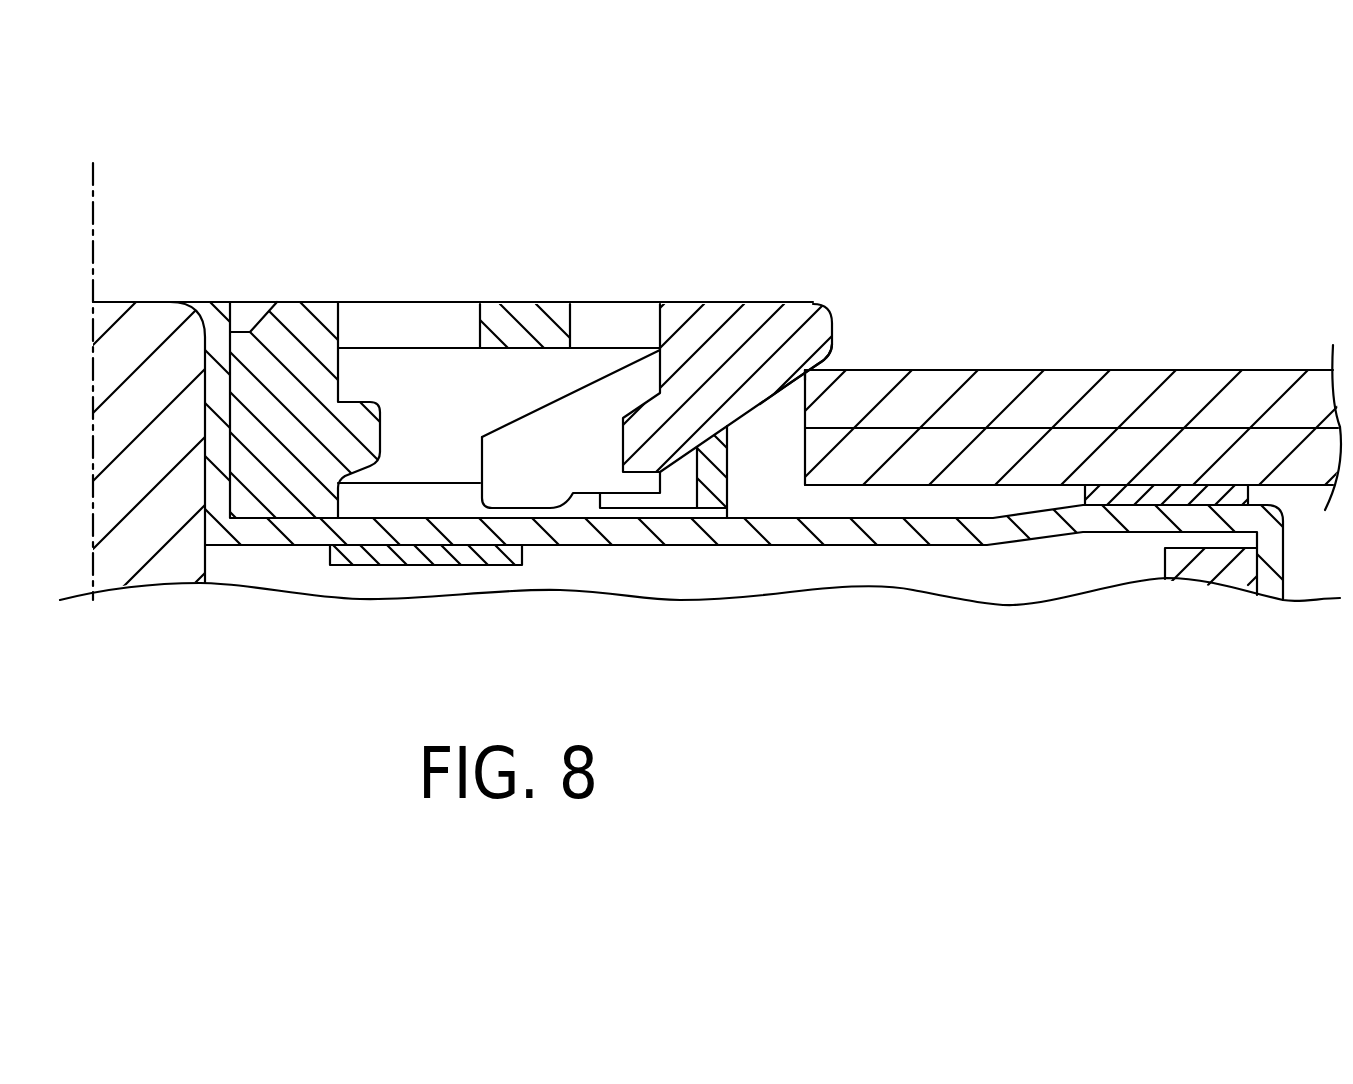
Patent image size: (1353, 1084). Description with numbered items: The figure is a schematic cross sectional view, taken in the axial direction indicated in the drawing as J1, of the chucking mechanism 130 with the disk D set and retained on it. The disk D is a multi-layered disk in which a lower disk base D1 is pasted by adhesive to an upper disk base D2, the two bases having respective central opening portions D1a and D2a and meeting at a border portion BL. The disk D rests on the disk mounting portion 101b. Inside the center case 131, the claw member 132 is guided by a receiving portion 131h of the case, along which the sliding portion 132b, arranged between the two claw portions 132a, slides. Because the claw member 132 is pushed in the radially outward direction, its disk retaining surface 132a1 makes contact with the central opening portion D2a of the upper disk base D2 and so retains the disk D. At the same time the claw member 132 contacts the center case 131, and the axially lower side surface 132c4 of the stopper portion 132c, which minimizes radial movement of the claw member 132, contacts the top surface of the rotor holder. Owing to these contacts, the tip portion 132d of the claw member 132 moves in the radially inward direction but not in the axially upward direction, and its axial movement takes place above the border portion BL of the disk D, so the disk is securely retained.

The axis line J1 is at (93, 240).
The chucking mechanism 130 is at (277, 226).
The center case 131 is at (399, 287).
The receiving portion 131h is at (728, 483).
The claw member 132 is at (727, 287).
The claw portion 132a is at (797, 398).
The disk retaining surface 132a1 is at (806, 362).
The sliding portion 132b is at (766, 388).
The stopper portion 132c is at (540, 405).
The axially lower side surface of the stopper portion 132c4 is at (528, 510).
The tip portion 132d is at (775, 385).
The disk D is at (1128, 332).
The lower disk base D1 is at (1013, 447).
The central opening portion of the lower disk base D1a is at (780, 425).
The upper disk base D2 is at (1230, 370).
The central opening portion of the upper disk base D2a is at (805, 373).
The border portion BL is at (1093, 368).
The disk mounting portion 101b is at (1133, 497).